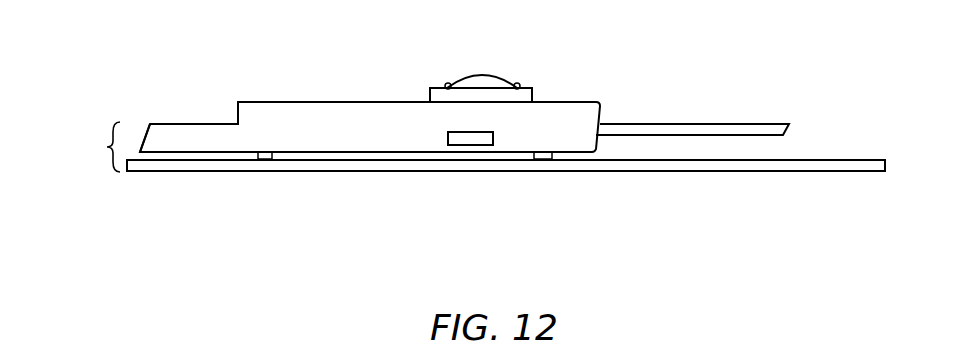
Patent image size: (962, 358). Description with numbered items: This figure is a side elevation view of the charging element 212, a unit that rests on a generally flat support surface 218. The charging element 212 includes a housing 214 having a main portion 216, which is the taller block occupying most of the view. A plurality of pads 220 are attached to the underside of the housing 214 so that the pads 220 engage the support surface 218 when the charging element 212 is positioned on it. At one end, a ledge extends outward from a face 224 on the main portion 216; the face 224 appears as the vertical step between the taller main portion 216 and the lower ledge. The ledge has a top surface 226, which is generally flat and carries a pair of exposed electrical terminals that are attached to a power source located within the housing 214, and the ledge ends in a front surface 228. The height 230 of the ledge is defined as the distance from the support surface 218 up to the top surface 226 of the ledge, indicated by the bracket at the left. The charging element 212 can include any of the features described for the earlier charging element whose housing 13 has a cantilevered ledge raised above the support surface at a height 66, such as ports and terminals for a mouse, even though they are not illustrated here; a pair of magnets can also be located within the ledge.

The housing 13 is at (594, 102).
The height 66 is at (506, 191).
The charging element 212 is at (299, 233).
The housing 214 is at (418, 133).
The main portion 216 is at (382, 120).
The support surface 218 is at (780, 160).
The pads 220 is at (273, 160).
The face 224 is at (235, 113).
The top surface 226 is at (187, 122).
The front surface 228 is at (144, 128).
The height 230 is at (103, 147).